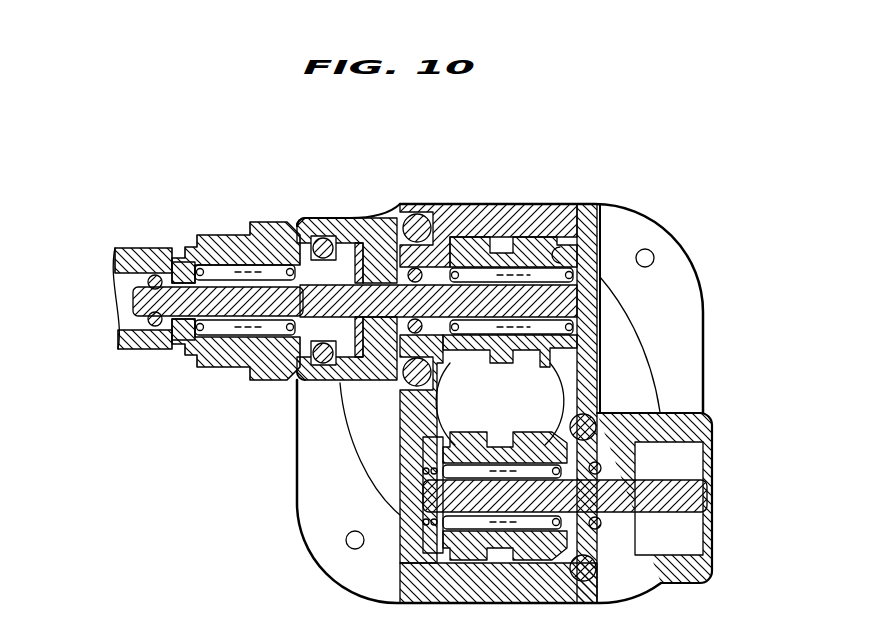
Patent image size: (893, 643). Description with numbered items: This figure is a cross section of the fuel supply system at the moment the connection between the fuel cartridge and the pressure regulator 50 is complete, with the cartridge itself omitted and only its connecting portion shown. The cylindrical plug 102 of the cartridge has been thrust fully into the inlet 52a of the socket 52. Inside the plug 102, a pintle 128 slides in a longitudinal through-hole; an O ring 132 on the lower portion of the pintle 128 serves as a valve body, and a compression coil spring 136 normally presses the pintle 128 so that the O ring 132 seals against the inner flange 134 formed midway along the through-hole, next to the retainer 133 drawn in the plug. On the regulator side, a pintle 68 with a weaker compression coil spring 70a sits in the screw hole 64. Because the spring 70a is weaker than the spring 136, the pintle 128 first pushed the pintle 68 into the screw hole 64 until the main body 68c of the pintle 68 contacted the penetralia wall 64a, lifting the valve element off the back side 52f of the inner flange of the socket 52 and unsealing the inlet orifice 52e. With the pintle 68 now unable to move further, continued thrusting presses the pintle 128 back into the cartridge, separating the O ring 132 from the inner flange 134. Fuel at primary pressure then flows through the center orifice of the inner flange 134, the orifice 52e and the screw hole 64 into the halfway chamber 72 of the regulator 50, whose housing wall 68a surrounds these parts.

The pressure regulator 50 is at (250, 541).
The socket 52 is at (317, 210).
The inlet 52a is at (382, 214).
The inlet orifice 52e is at (268, 380).
The back side of the inner flange 52f is at (446, 213).
The screw hole 64 is at (530, 213).
The penetralia wall 64a is at (605, 210).
The pintle 68 is at (600, 282).
The housing wall 68a is at (315, 388).
The main body of the pintle 68c is at (545, 297).
The compression coil spring 70a is at (568, 341).
The halfway chamber 72 is at (470, 403).
The plug 102 is at (213, 224).
The pintle 128 is at (195, 320).
The O ring 132 is at (130, 252).
The retainer 133 is at (295, 270).
The inner flange 134 is at (178, 262).
The compression coil spring 136 is at (235, 328).